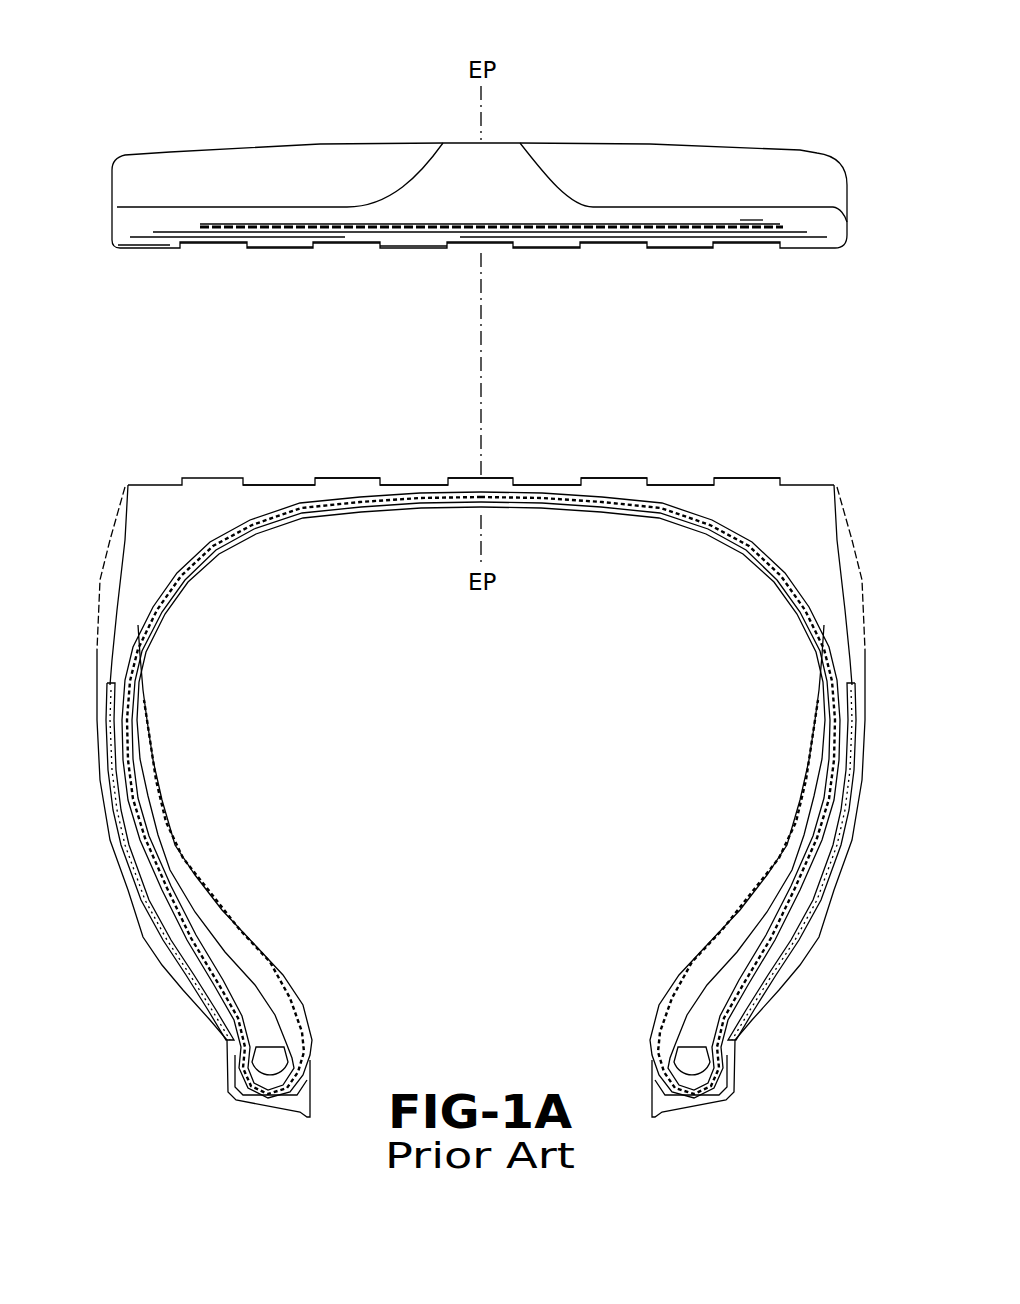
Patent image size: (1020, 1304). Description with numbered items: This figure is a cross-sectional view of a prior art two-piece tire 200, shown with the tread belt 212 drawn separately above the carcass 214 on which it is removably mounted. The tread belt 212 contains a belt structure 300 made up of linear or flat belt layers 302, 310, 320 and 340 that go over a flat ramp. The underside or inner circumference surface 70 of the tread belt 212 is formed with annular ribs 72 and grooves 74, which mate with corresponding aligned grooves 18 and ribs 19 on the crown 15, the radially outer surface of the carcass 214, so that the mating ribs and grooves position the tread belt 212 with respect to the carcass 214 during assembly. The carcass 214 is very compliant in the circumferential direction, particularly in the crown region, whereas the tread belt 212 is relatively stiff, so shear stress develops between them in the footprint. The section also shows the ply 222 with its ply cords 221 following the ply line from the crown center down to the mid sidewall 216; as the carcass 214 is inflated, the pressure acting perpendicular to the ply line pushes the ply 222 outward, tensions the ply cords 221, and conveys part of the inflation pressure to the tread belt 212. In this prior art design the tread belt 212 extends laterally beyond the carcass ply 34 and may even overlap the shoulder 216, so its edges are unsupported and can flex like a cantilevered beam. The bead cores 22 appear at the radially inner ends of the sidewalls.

The two-piece tire 200 is at (442, 174).
The tread belt 212 is at (440, 174).
The carcass 214 is at (494, 732).
The mid sidewall 216 is at (852, 574).
The belt layer 340 is at (213, 222).
The belt layer 320 is at (187, 227).
The belt layer 310 is at (163, 230).
The belt layer 302 is at (150, 247).
The belt structure 300 is at (262, 212).
The grooves 74 is at (745, 288).
The ribs 72 is at (678, 294).
The inner circumference surface 70 is at (419, 266).
The crown 15 is at (216, 464).
The grooves 18 is at (680, 485).
The ribs 19 is at (745, 478).
The ply 222 is at (481, 795).
The ply cords 221 is at (160, 607).
The carcass ply 34 is at (854, 761).
The bead core 22 is at (265, 1060).